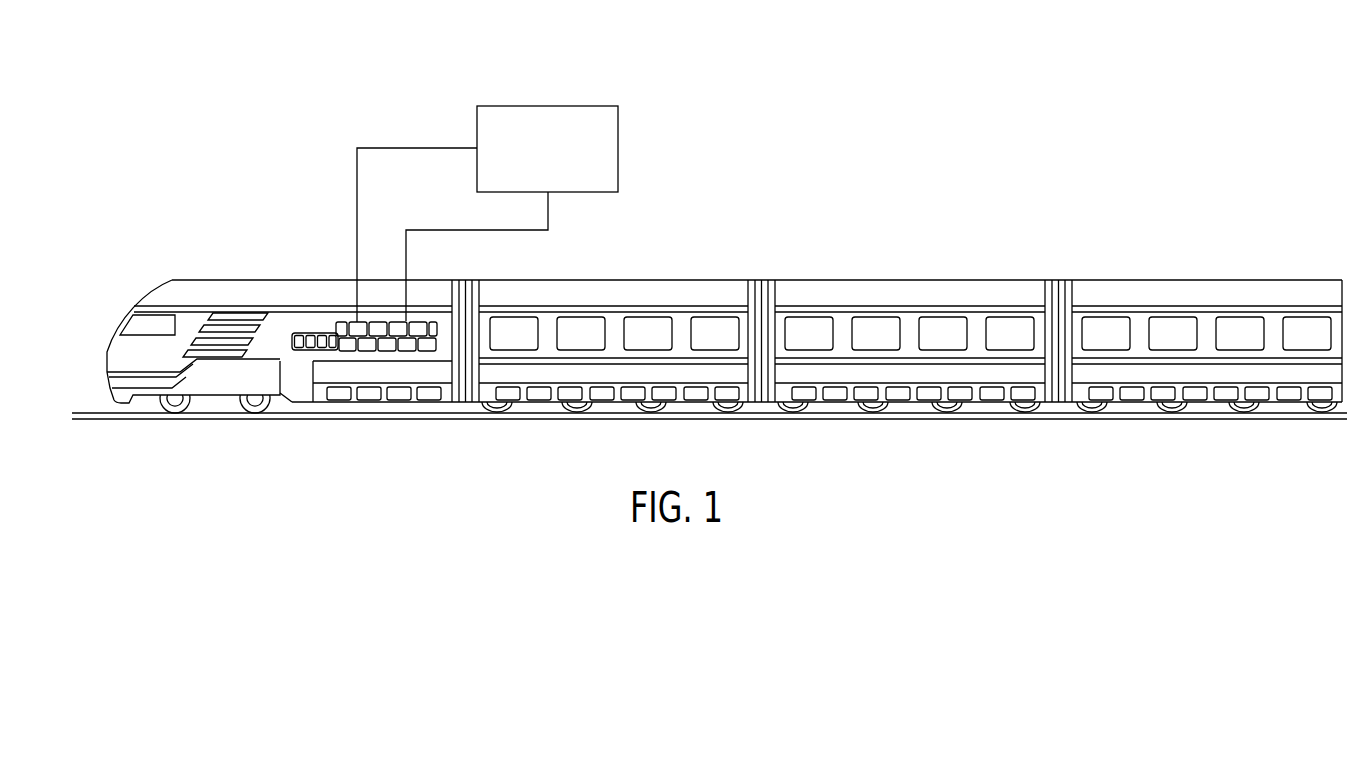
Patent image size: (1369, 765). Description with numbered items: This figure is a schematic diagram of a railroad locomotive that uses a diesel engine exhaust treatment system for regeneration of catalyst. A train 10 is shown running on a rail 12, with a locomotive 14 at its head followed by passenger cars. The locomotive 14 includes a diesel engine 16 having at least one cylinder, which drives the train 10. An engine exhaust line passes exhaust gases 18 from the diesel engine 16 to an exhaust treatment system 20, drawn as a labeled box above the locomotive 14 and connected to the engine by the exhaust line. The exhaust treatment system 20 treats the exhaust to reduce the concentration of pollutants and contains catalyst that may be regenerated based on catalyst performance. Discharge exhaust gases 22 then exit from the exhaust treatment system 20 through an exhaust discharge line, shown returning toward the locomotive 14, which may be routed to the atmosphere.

The train 10 is at (724, 320).
The rail 12 is at (832, 420).
The locomotive 14 is at (279, 320).
The diesel engine 16 is at (326, 333).
The exhaust gases 18 is at (382, 148).
The exhaust treatment system 20 is at (577, 106).
The discharge exhaust gases 22 is at (417, 230).